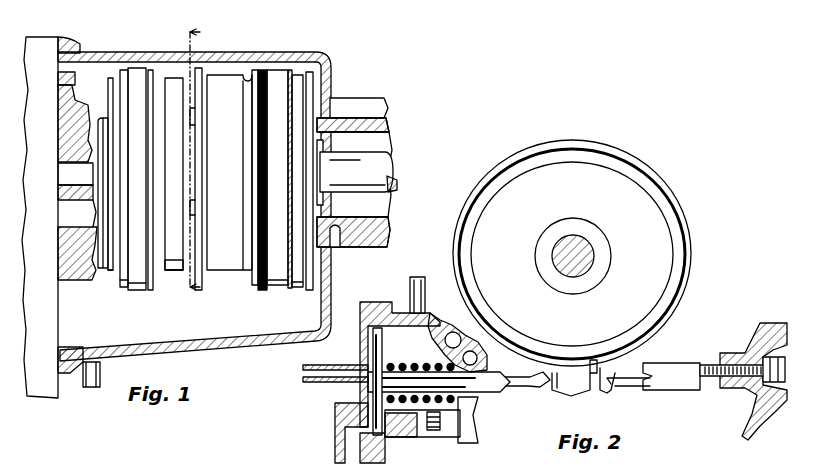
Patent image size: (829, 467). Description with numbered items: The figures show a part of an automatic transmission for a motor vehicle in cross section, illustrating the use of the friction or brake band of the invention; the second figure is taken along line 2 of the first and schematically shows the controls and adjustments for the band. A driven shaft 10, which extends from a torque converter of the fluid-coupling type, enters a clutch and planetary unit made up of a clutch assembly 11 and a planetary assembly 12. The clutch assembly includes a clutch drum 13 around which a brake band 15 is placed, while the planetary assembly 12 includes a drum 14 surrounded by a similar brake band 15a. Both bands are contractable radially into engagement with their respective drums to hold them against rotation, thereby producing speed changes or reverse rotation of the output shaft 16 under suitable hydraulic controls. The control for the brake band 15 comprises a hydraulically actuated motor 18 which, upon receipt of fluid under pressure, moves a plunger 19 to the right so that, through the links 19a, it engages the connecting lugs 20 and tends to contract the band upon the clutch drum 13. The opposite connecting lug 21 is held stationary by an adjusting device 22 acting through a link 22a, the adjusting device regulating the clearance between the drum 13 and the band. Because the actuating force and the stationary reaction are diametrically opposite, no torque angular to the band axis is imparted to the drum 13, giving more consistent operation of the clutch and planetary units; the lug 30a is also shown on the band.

In FIG. 1, the driven shaft 10 is at (72, 175).
In FIG. 1, the clutch assembly 11 is at (172, 85).
In FIG. 1, the planetary assembly 12 is at (232, 90).
In FIG. 1, the clutch drum 13 is at (173, 262).
In FIG. 2, the clutch drum 13 is at (624, 183).
In FIG. 1, the drum 14 is at (308, 101).
In FIG. 1, the brake band 15 is at (122, 82).
In FIG. 2, the brake band 15 is at (682, 207).
In FIG. 1, the brake band 15a is at (320, 60).
In FIG. 1, the output shaft 16 is at (388, 172).
In FIG. 2, the hydraulically actuated motor 18 is at (337, 425).
In FIG. 2, the plunger 19 is at (470, 405).
In FIG. 2, the links 19a is at (516, 388).
In FIG. 2, the connecting lugs 20 is at (557, 390).
In FIG. 2, the connecting lug 21 is at (609, 389).
In FIG. 2, the adjusting device 22 is at (733, 358).
In FIG. 2, the link 22a is at (648, 390).
In FIG. 2, the drum lug 30a is at (578, 372).
In FIG. 1, the section line 2 is at (202, 162).